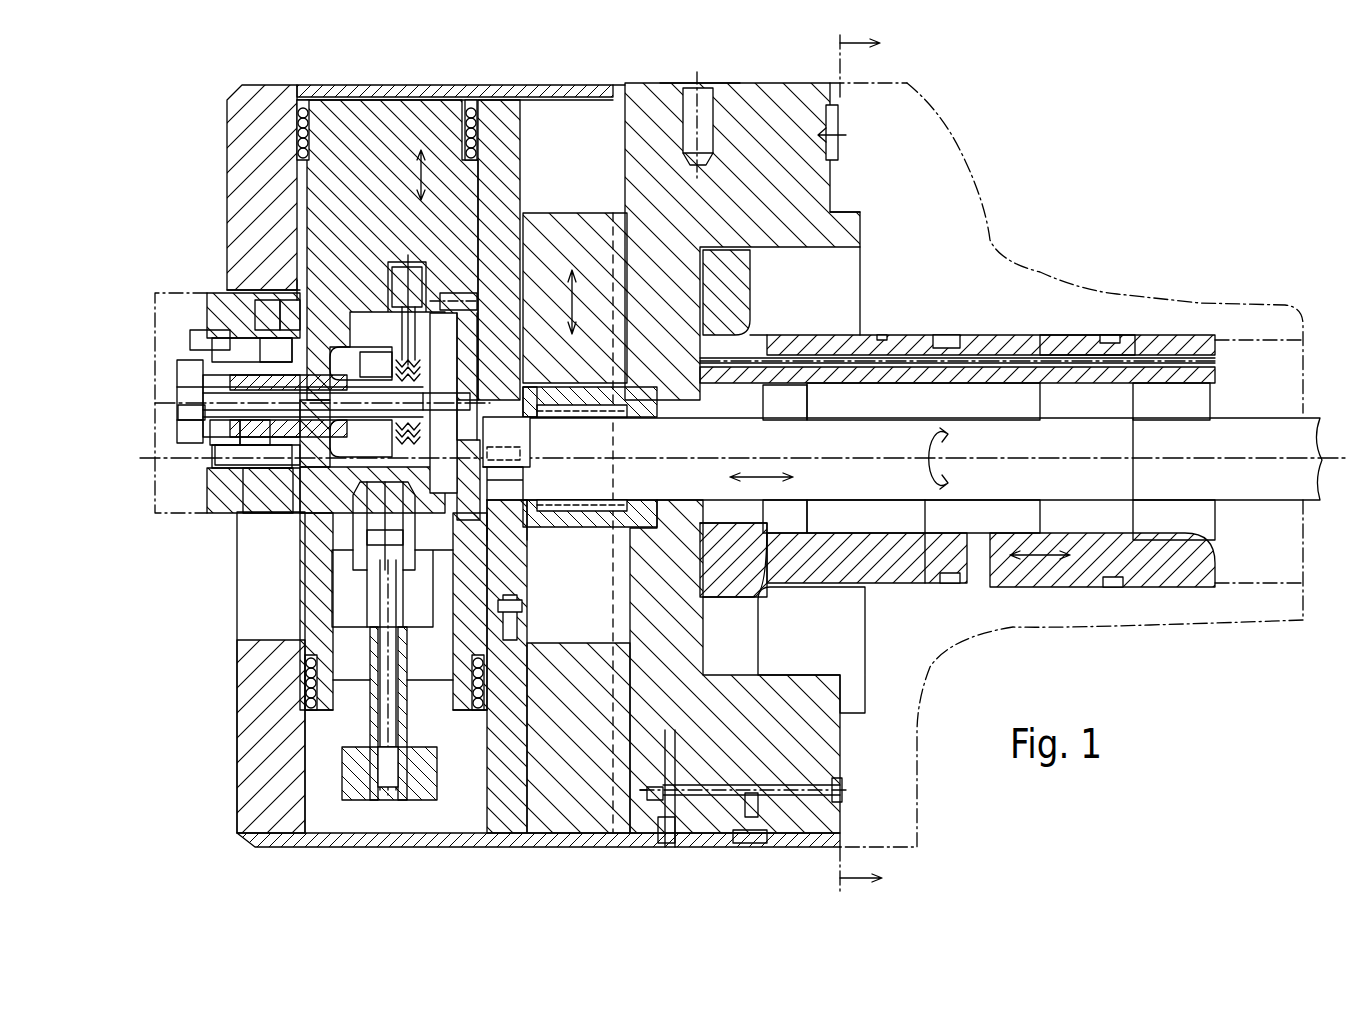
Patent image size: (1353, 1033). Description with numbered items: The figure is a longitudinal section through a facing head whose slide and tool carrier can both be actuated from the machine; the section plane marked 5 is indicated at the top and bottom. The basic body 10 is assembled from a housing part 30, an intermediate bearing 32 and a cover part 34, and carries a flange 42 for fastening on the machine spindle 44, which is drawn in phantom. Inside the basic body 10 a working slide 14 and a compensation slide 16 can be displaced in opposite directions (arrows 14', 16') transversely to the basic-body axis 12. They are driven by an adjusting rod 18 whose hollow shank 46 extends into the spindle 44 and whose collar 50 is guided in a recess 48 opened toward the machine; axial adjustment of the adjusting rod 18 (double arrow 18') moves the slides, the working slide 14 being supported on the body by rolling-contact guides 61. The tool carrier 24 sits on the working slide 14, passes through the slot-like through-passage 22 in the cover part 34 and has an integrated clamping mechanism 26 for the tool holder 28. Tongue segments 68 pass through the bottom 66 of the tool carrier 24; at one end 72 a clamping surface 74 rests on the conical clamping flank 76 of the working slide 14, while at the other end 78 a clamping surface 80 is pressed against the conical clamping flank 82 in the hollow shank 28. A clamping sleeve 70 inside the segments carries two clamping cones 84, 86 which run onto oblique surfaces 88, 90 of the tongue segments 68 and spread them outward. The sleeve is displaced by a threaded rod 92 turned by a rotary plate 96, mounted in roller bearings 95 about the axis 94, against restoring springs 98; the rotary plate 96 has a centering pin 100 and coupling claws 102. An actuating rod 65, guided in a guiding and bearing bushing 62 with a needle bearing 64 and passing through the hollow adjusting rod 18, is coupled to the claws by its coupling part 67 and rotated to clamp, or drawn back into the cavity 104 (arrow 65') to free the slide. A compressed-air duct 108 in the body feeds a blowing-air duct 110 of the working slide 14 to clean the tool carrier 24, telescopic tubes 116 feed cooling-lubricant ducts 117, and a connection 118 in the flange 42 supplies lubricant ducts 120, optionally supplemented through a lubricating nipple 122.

The basic body 10 is at (760, 112).
The basic-body axis 12 is at (990, 457).
The working slide 14 is at (413, 437).
The displacement arrow of the working slide 14' is at (401, 175).
The compensation slide 16 is at (575, 267).
The displacement arrow of the compensation slide 16' is at (554, 302).
The adjusting rod 18 is at (1001, 434).
The double arrow of axial adjustment 18' is at (1071, 617).
The through-passage 22 is at (248, 648).
The tool carrier 24 is at (230, 292).
The clamping mechanism 26 is at (232, 440).
The tool holder 28 is at (210, 350).
The housing part 30 is at (830, 205).
The intermediate bearing 32 is at (498, 150).
The cover part 34 is at (262, 115).
The flange 42 is at (845, 172).
The machine spindle 44 is at (917, 233).
The hollow shank 46 is at (1040, 337).
The recess 48 is at (830, 255).
The collar 50 is at (748, 325).
The rolling-contact guide 61 is at (298, 140).
The guiding and bearing bushing 62 is at (640, 500).
The needle bearing 64 is at (610, 418).
The actuating rod 65 is at (1180, 551).
The arrow of drawing back the actuating rod 65' is at (811, 596).
The bottom of the tool carrier 66 is at (275, 338).
The coupling part 67 is at (497, 493).
The tongue segments 68 is at (270, 470).
The clamping sleeve 70 is at (178, 385).
The one end of the tongue segments 72 is at (365, 348).
The clamping surface 74 is at (345, 380).
The conical clamping flank 76 is at (350, 340).
The other end of the tongue segments 78 is at (195, 340).
The clamping surface 80 is at (262, 333).
The conical clamping flank 82 is at (290, 333).
The clamping cone 84 is at (263, 285).
The clamping cone 86 is at (218, 432).
The oblique surface 88 is at (290, 298).
The oblique surface 90 is at (245, 432).
The threaded rod 92 is at (378, 497).
The axis 94 is at (185, 415).
The roller bearings 95 is at (500, 479).
The rotary plate 96 is at (448, 293).
The restoring springs 98 is at (400, 265).
The centering pin 100 is at (455, 330).
The coupling claws 102 is at (510, 417).
The cavity 104 is at (530, 520).
The compressed-air duct 108 is at (518, 618).
The blowing-air duct 110 is at (490, 548).
The telescopic tubes 116 is at (405, 745).
The cooling-lubricant ducts 117 is at (372, 540).
The connection 118 is at (845, 775).
The lubricant ducts 120 is at (823, 813).
The lubricating nipple 122 is at (770, 837).
The section line 5 is at (879, 464).